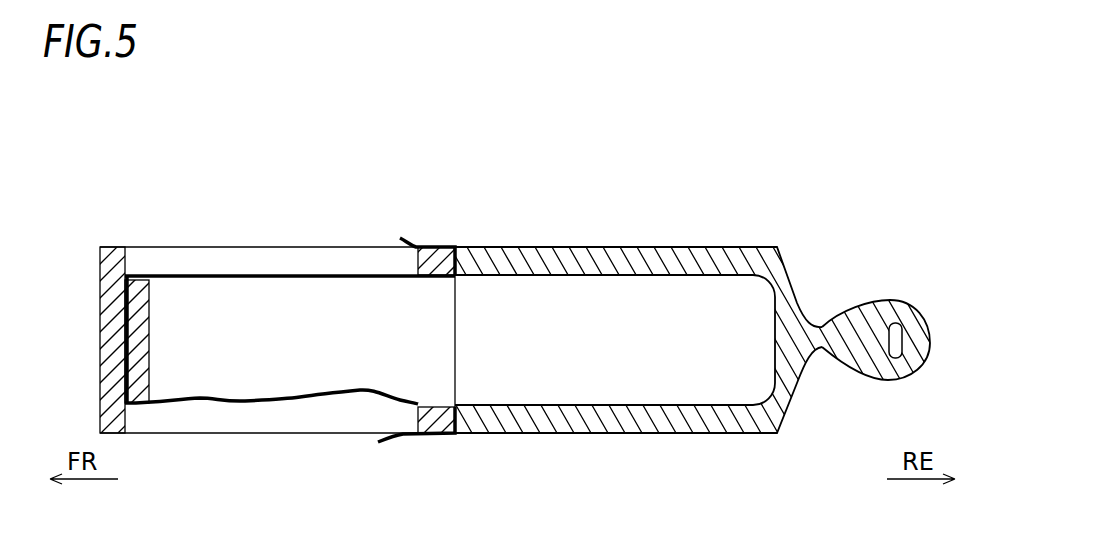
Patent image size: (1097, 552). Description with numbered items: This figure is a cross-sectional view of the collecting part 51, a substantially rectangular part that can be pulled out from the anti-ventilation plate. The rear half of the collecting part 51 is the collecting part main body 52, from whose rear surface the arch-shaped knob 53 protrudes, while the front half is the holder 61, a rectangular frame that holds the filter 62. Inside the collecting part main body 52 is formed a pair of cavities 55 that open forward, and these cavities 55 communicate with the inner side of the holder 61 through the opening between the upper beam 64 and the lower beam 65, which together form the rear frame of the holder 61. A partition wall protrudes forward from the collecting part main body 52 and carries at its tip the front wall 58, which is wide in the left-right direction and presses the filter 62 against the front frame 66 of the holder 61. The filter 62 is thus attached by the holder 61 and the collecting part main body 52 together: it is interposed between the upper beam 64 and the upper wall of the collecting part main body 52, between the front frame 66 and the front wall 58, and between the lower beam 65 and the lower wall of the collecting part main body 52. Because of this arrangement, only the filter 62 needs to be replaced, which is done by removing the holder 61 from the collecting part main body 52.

The collecting part 51 is at (836, 194).
The collecting part main body 52 is at (633, 247).
The knob 53 is at (903, 300).
The cavity 55 is at (608, 349).
The front wall 58 is at (150, 330).
The holder 61 is at (190, 247).
The filter 62 is at (302, 275).
The upper beam 64 is at (430, 247).
The lower beam 65 is at (437, 420).
The front frame 66 is at (100, 303).